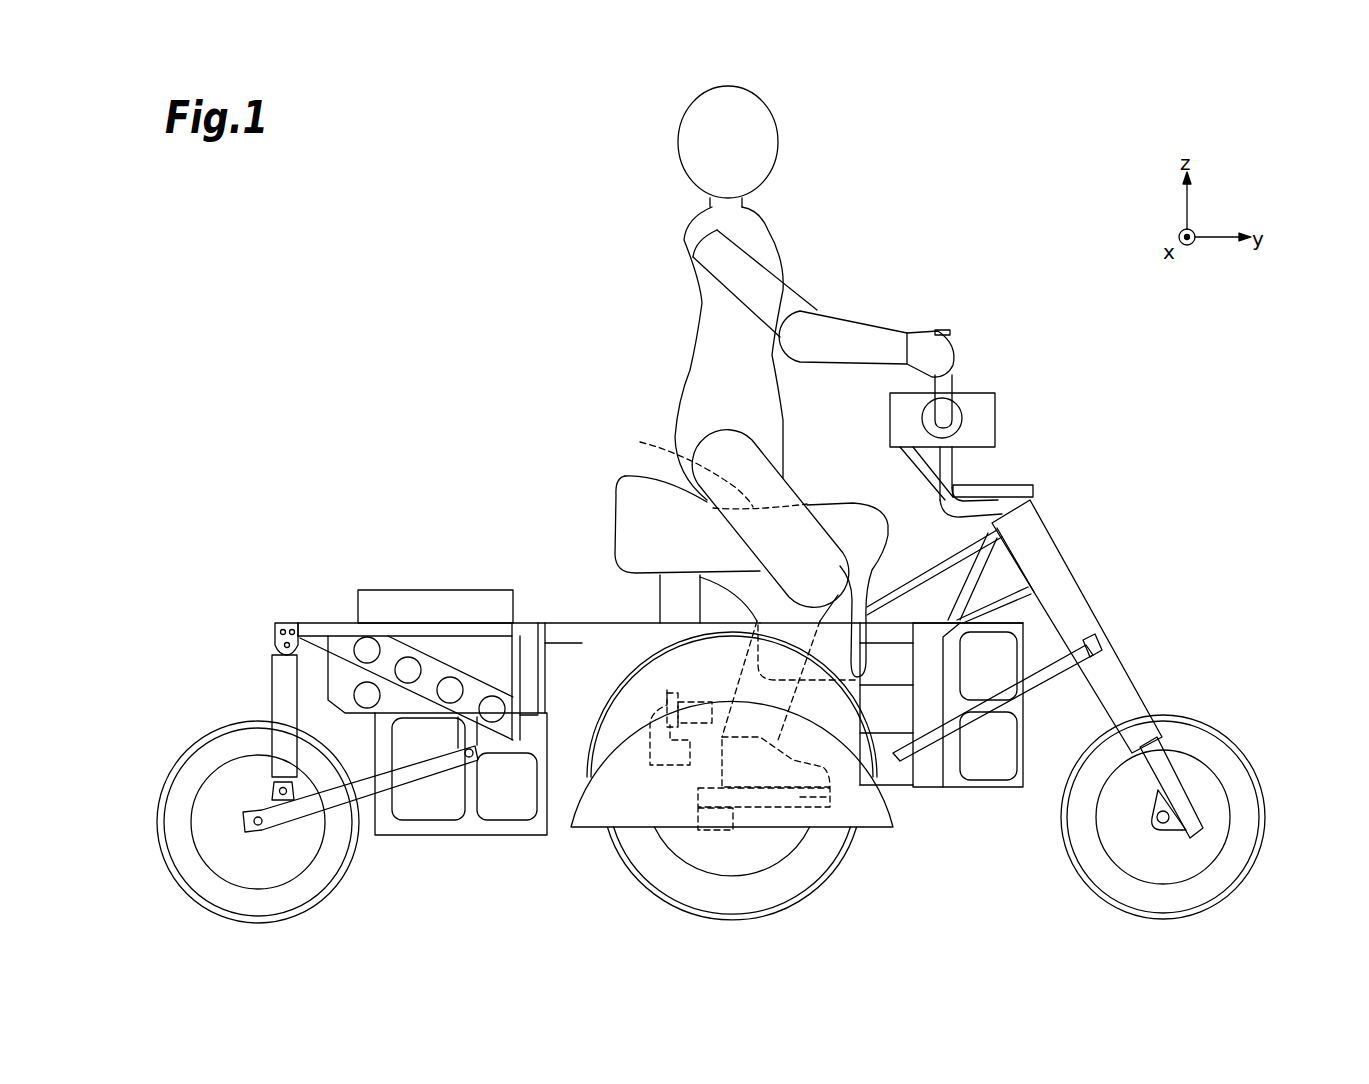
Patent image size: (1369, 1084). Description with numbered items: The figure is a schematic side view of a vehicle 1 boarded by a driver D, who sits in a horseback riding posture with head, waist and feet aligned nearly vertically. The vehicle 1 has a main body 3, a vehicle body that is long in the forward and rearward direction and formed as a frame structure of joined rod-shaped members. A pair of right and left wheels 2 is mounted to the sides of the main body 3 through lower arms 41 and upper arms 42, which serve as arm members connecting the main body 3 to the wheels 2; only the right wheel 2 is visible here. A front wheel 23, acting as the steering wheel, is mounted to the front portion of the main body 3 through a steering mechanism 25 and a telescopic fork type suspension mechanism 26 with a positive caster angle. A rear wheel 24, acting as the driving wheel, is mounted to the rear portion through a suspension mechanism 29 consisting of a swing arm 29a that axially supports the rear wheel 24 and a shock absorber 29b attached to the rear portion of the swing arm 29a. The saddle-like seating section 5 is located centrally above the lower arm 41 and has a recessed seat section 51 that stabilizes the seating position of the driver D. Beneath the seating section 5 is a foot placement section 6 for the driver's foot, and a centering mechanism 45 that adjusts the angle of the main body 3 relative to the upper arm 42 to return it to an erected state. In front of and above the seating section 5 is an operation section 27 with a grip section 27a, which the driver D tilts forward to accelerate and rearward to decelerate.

The vehicle 1 is at (512, 354).
The wheels 2 is at (645, 855).
The main body 3 is at (565, 628).
The seating section 5 is at (855, 503).
The foot placement section 6 is at (818, 800).
The front wheel 23 is at (1222, 752).
The rear wheel 24 is at (175, 790).
The steering mechanism 25 is at (1073, 585).
The suspension mechanism 26 is at (1118, 675).
The operation section 27 is at (996, 413).
The grip section 27a is at (950, 332).
The suspension mechanism 29 is at (203, 612).
The swing arm 29a is at (275, 757).
The shock absorber 29b is at (287, 688).
The lower arm 41 is at (735, 818).
The upper arm 42 is at (695, 705).
The centering mechanism 45 is at (650, 740).
The seat section 51 is at (690, 470).
The driver D is at (715, 333).